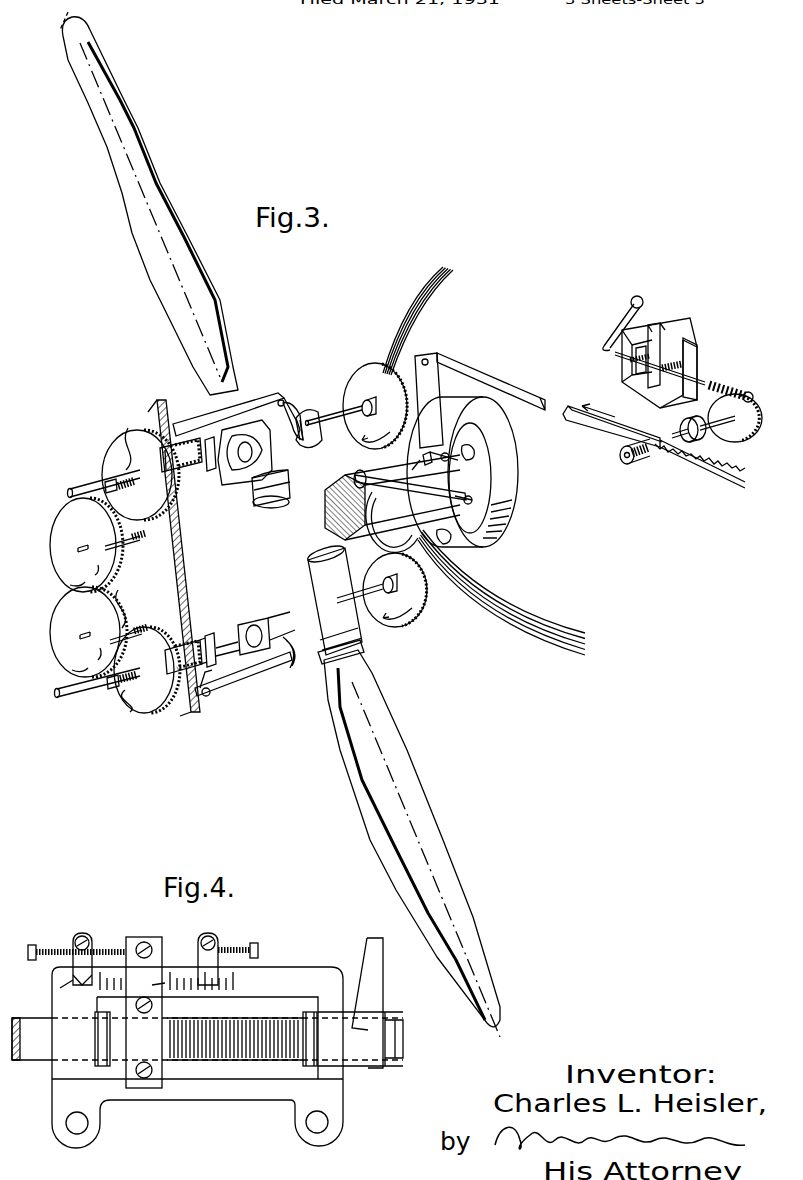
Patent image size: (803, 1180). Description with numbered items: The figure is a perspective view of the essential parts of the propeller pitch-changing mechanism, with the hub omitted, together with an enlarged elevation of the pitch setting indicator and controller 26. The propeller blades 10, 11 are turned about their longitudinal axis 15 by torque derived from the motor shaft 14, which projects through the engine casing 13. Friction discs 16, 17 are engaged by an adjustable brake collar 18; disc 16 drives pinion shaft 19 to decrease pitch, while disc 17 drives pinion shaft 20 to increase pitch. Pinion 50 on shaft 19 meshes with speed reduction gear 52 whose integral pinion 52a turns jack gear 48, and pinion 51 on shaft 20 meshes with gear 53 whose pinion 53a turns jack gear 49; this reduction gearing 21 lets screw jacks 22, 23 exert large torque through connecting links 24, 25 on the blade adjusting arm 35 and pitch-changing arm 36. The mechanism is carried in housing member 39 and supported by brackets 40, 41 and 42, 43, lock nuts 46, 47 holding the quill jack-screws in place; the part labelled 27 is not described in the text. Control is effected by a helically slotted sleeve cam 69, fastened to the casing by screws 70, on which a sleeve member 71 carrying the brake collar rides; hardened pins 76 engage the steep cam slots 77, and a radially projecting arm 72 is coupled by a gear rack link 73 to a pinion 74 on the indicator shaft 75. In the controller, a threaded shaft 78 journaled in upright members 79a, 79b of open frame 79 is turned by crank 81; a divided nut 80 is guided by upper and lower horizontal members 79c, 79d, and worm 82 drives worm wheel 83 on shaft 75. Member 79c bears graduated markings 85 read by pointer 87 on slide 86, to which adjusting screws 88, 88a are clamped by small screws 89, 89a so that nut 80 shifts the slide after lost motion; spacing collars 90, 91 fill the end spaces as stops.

In FIG. 3, the propeller blade 10 is at (128, 125).
In FIG. 3, the propeller blade 11 is at (452, 878).
In FIG. 3, the engine casing 13 is at (424, 284).
In FIG. 3, the motor shaft 14 is at (326, 522).
In FIG. 3, the longitudinal blade axis 15 is at (290, 517).
In FIG. 3, the friction disc 16 is at (375, 406).
In FIG. 3, the friction disc 17 is at (395, 590).
In FIG. 3, the friction brake collar 18 is at (392, 523).
In FIG. 3, the pinion shaft 19 is at (345, 418).
In FIG. 3, the pinion shaft 20 is at (358, 602).
In FIG. 3, the reduction gearing 21 is at (84, 570).
In FIG. 3, the screw jack 22 is at (170, 468).
In FIG. 3, the screw jack 23 is at (183, 645).
In FIG. 3, the connecting link 24 is at (258, 400).
In FIG. 3, the connecting link 25 is at (262, 676).
In FIG. 3, the pitch indicator and controller 26 is at (665, 359).
In FIG. 4, the pitch indicator and controller 26 is at (184, 1117).
In FIG. 3, the cylinder 27 is at (272, 510).
In FIG. 3, the blade adjusting arm 35 is at (290, 410).
In FIG. 3, the pitch-changing arm 36 is at (297, 652).
In FIG. 3, the housing member 39 is at (190, 572).
In FIG. 3, the bracket 40 is at (240, 470).
In FIG. 3, the bracket 41 is at (305, 440).
In FIG. 3, the bracket 42 is at (257, 625).
In FIG. 3, the bracket 43 is at (310, 635).
In FIG. 3, the lock nut 46 is at (212, 472).
In FIG. 3, the lock nut 47 is at (212, 633).
In FIG. 3, the jack gear 48 is at (140, 475).
In FIG. 3, the jack gear 49 is at (147, 670).
In FIG. 3, the pinion 50 is at (95, 490).
In FIG. 3, the pinion 51 is at (74, 700).
In FIG. 3, the speed reduction gear 52 is at (86, 545).
In FIG. 3, the pinion 52a is at (150, 538).
In FIG. 3, the speed reduction gear 53 is at (88, 632).
In FIG. 3, the pinion 53a is at (144, 620).
In FIG. 3, the sleeve cam 69 is at (444, 464).
In FIG. 3, the screws 70 is at (478, 446).
In FIG. 3, the sleeve member 71 is at (425, 464).
In FIG. 3, the radially projecting arm 72 is at (429, 400).
In FIG. 3, the gear rack link 73 is at (505, 393).
In FIG. 3, the pinion 74 is at (640, 463).
In FIG. 3, the indicator shaft 75 is at (668, 440).
In FIG. 3, the hardened pins 76 is at (471, 502).
In FIG. 3, the helical cam slots 77 is at (372, 485).
In FIG. 3, the threaded shaft 78 is at (668, 382).
In FIG. 4, the threaded shaft 78 is at (232, 1062).
In FIG. 3, the open frame 79 is at (698, 365).
In FIG. 4, the open frame 79 is at (52, 982).
In FIG. 4, the upright frame member 79a is at (207, 1039).
In FIG. 4, the upright frame member 79b is at (333, 1039).
In FIG. 4, the upper horizontal frame member 79c is at (207, 1026).
In FIG. 4, the lower horizontal frame member 79d is at (241, 1088).
In FIG. 3, the divided nut 80 is at (660, 325).
In FIG. 4, the divided nut 80 is at (144, 937).
In FIG. 3, the crank 81 is at (637, 296).
In FIG. 4, the crank 81 is at (384, 978).
In FIG. 3, the worm member 82 is at (740, 387).
In FIG. 3, the worm wheel 83 is at (762, 416).
In FIG. 4, the graduated markings 85 is at (147, 984).
In FIG. 4, the slide 86 is at (104, 970).
In FIG. 4, the pointer 87 is at (65, 989).
In FIG. 4, the adjusting screw 88 is at (48, 946).
In FIG. 4, the adjusting screw 88a is at (258, 945).
In FIG. 4, the small screw 89 is at (82, 933).
In FIG. 4, the small screw 89a is at (208, 933).
In FIG. 4, the spacing collar 90 is at (104, 1068).
In FIG. 4, the spacing collar 91 is at (310, 1068).